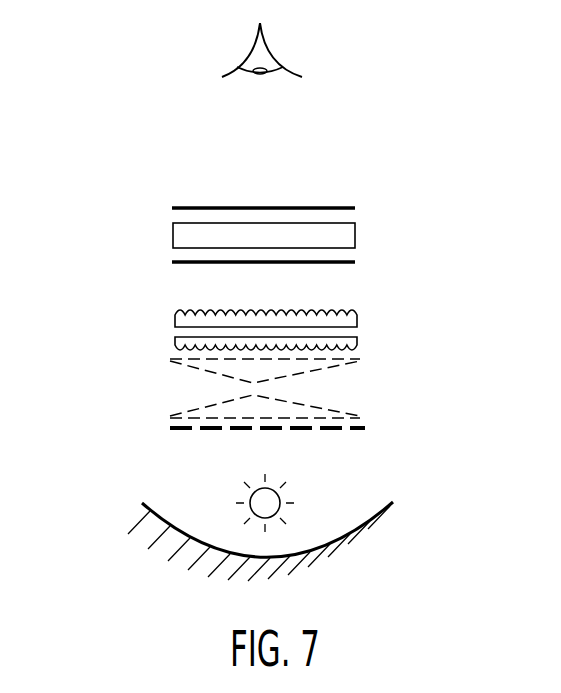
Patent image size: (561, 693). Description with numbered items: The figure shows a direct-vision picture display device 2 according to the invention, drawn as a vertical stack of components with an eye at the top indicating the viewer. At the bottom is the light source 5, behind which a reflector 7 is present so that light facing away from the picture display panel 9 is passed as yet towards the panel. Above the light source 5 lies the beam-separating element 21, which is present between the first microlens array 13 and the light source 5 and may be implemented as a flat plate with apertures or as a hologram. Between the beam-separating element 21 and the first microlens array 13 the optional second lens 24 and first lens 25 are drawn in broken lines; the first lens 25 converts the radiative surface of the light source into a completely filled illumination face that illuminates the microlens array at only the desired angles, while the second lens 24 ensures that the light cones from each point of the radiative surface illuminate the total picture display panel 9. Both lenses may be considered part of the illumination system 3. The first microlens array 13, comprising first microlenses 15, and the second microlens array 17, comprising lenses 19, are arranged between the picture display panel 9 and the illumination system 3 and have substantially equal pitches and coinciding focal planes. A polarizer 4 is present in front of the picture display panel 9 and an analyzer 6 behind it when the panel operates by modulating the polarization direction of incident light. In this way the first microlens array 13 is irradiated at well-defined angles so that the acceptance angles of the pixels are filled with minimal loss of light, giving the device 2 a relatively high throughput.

The direct-vision device 2 is at (102, 410).
The illumination system 3 is at (438, 506).
The polarizer 4 is at (340, 265).
The light source 5 is at (246, 501).
The analyzer 6 is at (355, 208).
The reflector 7 is at (184, 539).
The picture display panel 9 is at (338, 235).
The first microlens array 13 is at (374, 343).
The first microlenses 15 is at (200, 353).
The second microlens array 17 is at (374, 318).
The lenses of the second microlens array 19 is at (200, 311).
The beam-separating element 21 is at (350, 430).
The second lens 24 is at (330, 406).
The first lens 25 is at (330, 372).